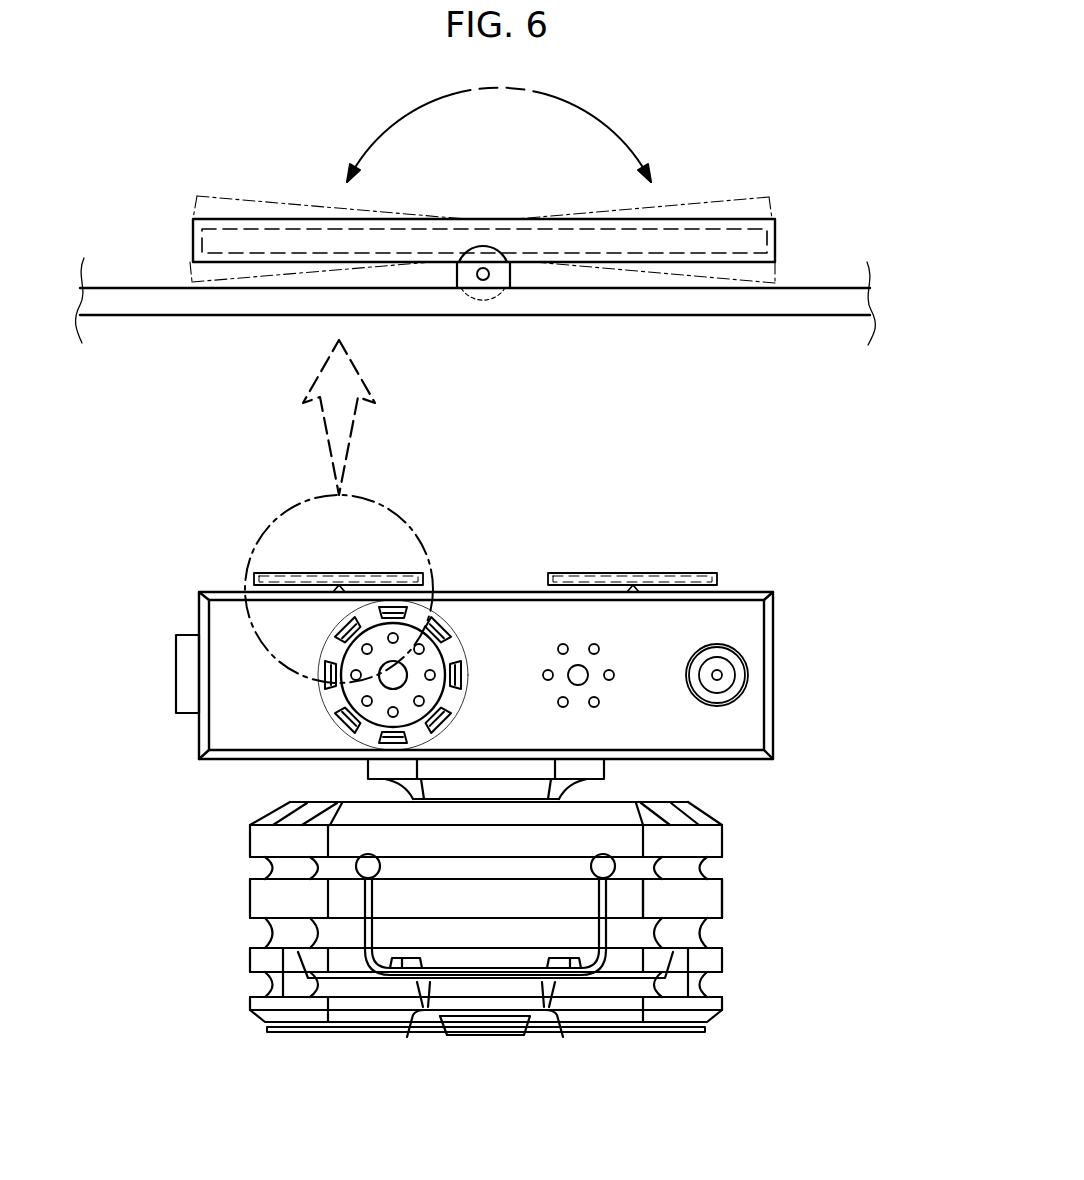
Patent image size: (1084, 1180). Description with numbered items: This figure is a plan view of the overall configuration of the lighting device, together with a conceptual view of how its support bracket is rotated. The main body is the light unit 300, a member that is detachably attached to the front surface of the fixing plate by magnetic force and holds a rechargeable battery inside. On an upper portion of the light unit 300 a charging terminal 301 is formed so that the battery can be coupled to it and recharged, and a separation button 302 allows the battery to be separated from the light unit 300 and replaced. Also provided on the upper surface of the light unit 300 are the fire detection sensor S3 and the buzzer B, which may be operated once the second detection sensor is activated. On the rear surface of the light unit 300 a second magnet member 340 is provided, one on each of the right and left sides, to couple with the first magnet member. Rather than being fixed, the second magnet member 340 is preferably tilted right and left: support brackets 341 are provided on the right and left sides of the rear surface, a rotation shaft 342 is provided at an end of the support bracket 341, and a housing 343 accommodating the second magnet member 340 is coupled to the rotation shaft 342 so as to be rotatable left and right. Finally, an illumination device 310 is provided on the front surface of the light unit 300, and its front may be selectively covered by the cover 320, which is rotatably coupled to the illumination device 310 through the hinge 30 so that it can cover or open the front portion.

The light unit 300 is at (499, 637).
The charging terminal 301 is at (730, 677).
The separation button 302 is at (183, 682).
The fire detection sensor S3 is at (443, 665).
The buzzer B is at (575, 670).
The second magnet member 340 is at (482, 323).
The support bracket 341 is at (457, 272).
The rotation shaft 342 is at (537, 333).
The housing 343 is at (677, 255).
The hinge 30 is at (556, 960).
The illumination device 310 is at (715, 898).
The cover 320 is at (315, 1032).